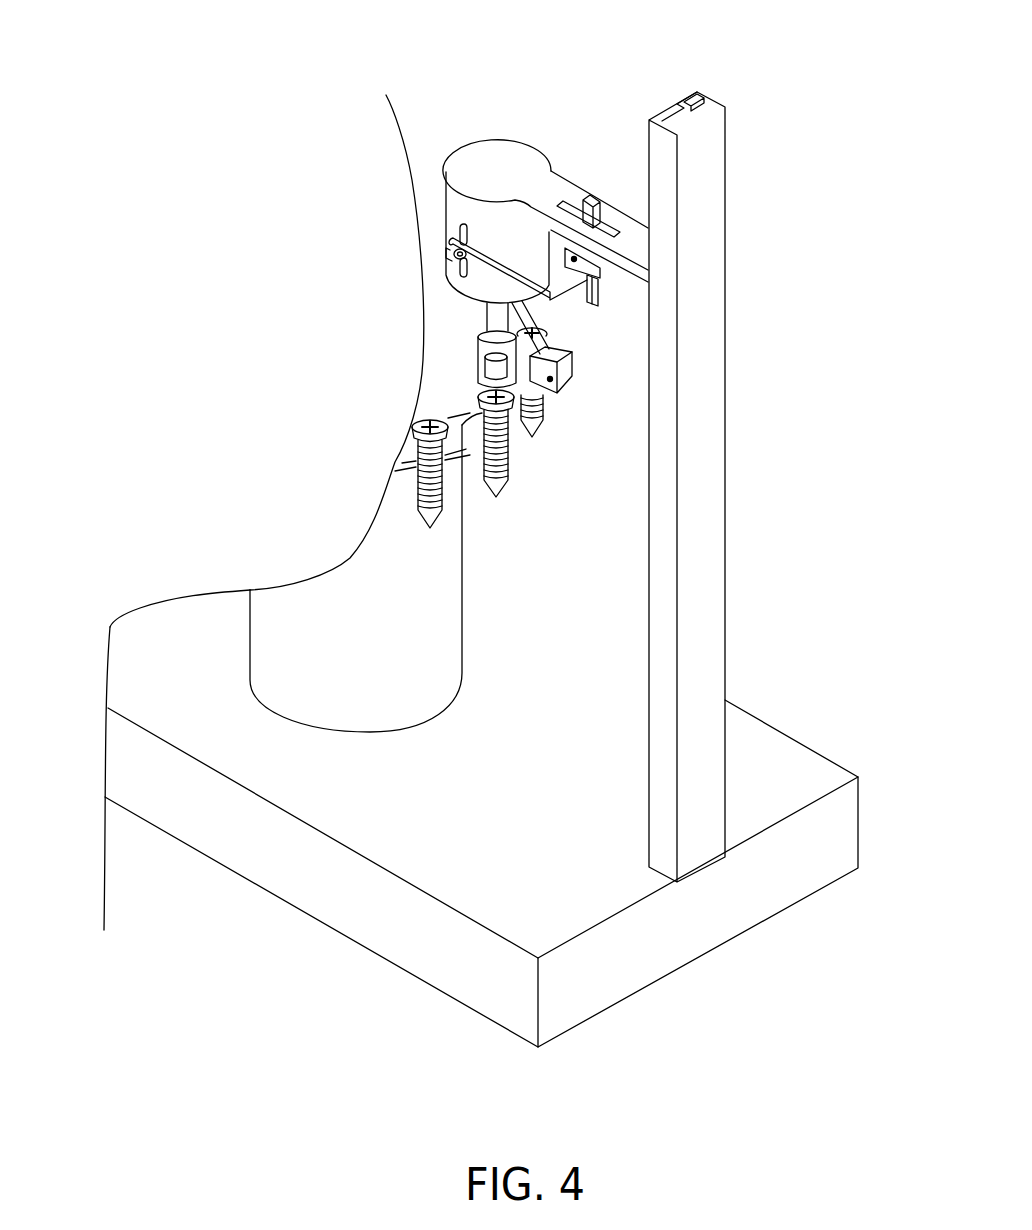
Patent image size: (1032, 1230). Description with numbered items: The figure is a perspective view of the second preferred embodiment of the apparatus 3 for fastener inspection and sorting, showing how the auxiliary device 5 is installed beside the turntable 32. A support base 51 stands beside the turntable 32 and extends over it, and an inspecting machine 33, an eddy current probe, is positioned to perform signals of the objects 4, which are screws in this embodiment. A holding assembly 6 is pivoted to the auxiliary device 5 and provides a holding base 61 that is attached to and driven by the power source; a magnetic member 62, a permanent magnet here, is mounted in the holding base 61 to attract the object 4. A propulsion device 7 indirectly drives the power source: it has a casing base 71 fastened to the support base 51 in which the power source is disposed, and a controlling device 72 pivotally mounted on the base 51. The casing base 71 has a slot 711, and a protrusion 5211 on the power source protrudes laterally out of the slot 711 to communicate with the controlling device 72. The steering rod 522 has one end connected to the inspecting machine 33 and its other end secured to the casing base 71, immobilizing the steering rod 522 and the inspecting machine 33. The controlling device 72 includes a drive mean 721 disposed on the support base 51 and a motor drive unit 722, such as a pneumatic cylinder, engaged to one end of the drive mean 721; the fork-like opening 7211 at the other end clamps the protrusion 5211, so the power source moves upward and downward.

The apparatus for fastener inspection and sorting 3 is at (200, 1028).
The turntable 32 is at (445, 392).
The inspecting machine 33 is at (578, 360).
The object 4 is at (412, 522).
The auxiliary device 5 is at (471, 158).
The support base 51 is at (503, 158).
The steering rod 522 is at (553, 333).
The protrusion 5211 is at (455, 257).
The holding assembly 6 is at (478, 346).
The holding base 61 is at (482, 350).
The magnetic member 62 is at (455, 456).
The propulsion device 7 is at (583, 207).
The casing base 71 is at (450, 202).
The slot 711 is at (460, 238).
The controlling device 72 is at (610, 290).
The drive mean 721 is at (612, 306).
The motor drive unit 722 is at (648, 243).
The fork-like opening 7211 is at (453, 252).